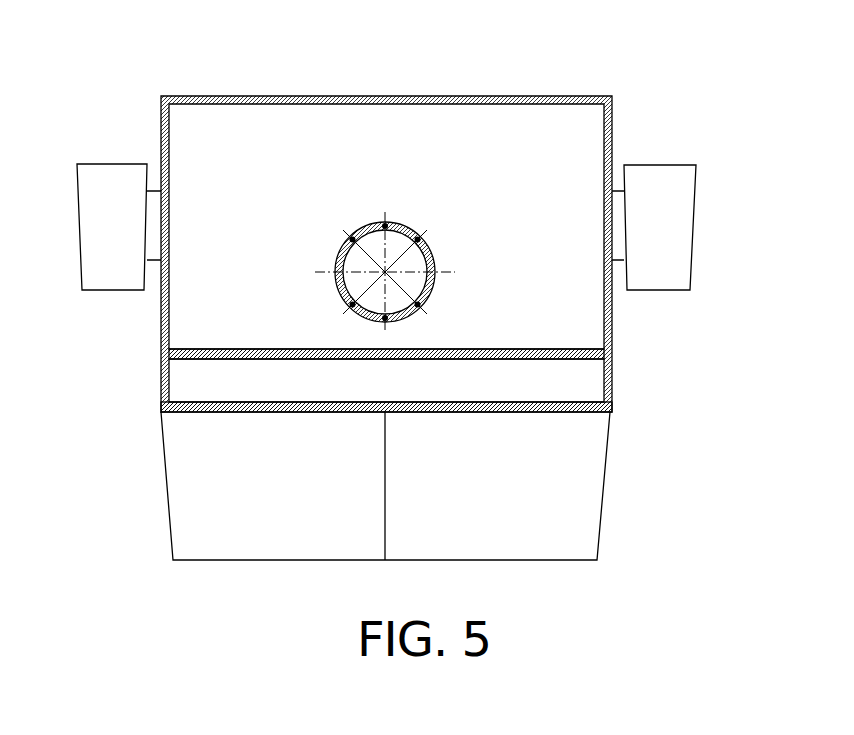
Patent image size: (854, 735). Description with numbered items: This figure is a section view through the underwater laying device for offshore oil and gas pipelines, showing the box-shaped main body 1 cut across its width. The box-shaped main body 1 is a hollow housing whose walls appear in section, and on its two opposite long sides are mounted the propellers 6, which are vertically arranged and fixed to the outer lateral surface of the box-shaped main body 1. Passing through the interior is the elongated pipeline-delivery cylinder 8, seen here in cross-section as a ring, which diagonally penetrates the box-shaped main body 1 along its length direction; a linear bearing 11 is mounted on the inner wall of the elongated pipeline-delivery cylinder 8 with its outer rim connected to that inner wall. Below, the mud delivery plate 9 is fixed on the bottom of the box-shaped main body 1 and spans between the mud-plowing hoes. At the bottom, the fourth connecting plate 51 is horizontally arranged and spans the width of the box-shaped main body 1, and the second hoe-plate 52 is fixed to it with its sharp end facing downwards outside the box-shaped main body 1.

The box-shaped main body 1 is at (205, 150).
The propellers 6 is at (112, 218).
The elongated pipeline-delivery cylinder 8 is at (383, 228).
The mud delivery plate 9 is at (538, 357).
The linear bearing 11 is at (426, 240).
The fourth connecting plate 51 is at (600, 408).
The second hoe-plate 52 is at (552, 445).